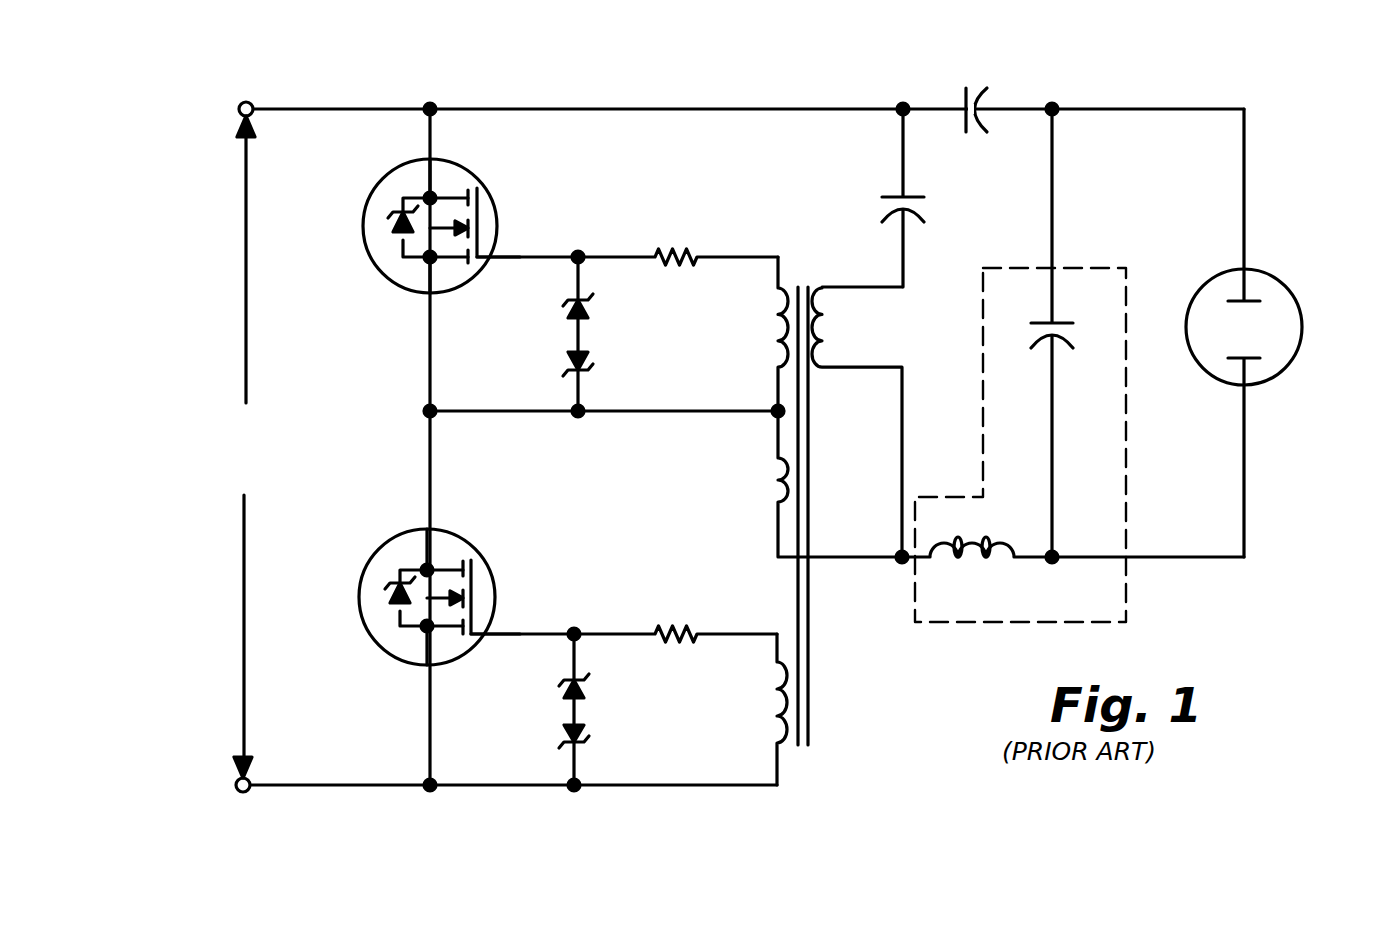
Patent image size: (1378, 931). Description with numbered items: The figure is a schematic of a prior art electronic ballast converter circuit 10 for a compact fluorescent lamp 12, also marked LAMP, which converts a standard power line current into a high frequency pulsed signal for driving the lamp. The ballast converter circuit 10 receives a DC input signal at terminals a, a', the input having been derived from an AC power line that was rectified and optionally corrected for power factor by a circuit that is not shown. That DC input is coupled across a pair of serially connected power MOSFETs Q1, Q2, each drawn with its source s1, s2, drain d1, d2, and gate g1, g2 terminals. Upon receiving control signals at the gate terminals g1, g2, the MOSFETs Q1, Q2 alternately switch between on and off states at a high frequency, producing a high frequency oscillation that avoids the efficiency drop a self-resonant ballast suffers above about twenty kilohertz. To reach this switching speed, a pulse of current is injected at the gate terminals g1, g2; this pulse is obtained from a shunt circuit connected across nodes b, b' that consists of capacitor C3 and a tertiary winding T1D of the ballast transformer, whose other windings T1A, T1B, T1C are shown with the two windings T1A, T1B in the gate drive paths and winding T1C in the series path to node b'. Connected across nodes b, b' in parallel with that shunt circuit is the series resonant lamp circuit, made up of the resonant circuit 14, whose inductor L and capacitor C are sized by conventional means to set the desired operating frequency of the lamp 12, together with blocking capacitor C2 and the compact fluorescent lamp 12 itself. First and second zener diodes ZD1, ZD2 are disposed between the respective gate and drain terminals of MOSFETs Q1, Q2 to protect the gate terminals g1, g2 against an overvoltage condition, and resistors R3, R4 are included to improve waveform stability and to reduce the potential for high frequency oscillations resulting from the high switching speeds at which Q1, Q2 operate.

The electronic ballast converter circuit 10 is at (714, 53).
The compact fluorescent lamp 12 is at (1302, 330).
The resonant circuit 14 is at (1126, 447).
The power MOSFET Q1 is at (492, 583).
The power MOSFET Q2 is at (496, 212).
The first zener diode ZD1 is at (538, 709).
The second zener diode ZD2 is at (544, 334).
The resistor R3 is at (668, 622).
The resistor R4 is at (681, 250).
The ballast transformer winding T1A is at (752, 337).
The ballast transformer winding T1B is at (741, 709).
The ballast transformer winding T1C is at (800, 484).
The tertiary winding T1D is at (860, 422).
The blocking capacitor C2 is at (979, 92).
The capacitor C3 is at (926, 212).
The capacitor C is at (1071, 338).
The inductor L is at (970, 562).
The compact fluorescent lamp LAMP is at (1326, 268).
The DC input terminal a is at (245, 97).
The DC input terminal a' is at (236, 802).
The node b is at (901, 87).
The node b' is at (887, 580).
The source terminal s1 is at (402, 538).
The drain terminal d1 is at (401, 667).
The gate terminal g1 is at (491, 655).
The source terminal s2 is at (408, 168).
The drain terminal d2 is at (403, 293).
The gate terminal g2 is at (494, 277).